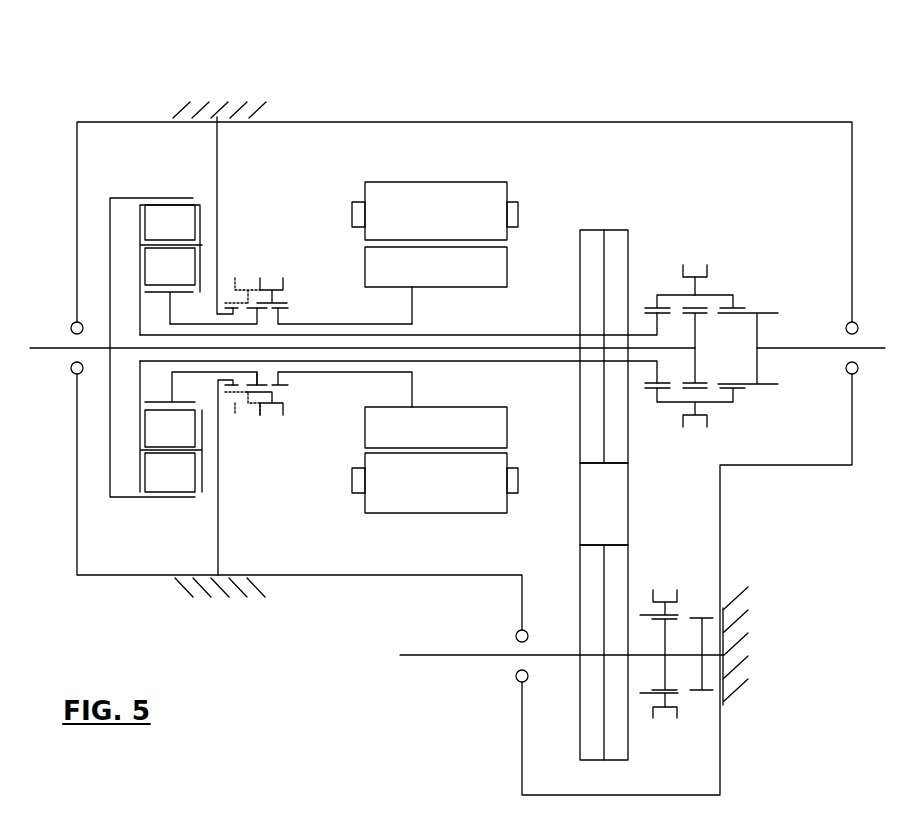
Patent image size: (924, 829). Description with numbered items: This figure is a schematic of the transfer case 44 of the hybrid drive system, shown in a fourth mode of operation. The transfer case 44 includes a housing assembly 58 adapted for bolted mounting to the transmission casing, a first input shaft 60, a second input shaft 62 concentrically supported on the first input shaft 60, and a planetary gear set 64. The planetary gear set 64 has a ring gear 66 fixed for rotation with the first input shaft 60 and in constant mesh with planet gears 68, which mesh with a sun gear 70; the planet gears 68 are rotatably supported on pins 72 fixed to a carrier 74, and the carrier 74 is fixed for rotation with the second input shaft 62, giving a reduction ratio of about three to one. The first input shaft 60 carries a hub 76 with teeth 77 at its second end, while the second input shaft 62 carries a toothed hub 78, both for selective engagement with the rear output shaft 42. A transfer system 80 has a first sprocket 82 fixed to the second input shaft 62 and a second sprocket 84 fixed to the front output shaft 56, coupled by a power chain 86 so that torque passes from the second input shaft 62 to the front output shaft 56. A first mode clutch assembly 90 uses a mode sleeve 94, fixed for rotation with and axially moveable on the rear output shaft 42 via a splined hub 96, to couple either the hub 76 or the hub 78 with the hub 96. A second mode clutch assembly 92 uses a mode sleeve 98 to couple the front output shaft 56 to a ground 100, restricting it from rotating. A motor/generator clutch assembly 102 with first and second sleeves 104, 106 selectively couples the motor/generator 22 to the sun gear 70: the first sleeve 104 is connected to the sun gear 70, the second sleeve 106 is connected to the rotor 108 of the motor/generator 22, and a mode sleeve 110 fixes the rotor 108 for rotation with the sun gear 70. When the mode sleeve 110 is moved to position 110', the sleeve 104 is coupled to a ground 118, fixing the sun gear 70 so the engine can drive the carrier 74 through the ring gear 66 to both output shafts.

The transfer case 44 is at (487, 63).
The housing assembly 58 is at (703, 122).
The first input shaft 60 is at (43, 347).
The rear output shaft 42 is at (868, 348).
The front output shaft 56 is at (435, 657).
The ring gear 66 is at (120, 197).
The planetary gear set 64 is at (194, 240).
The planet gears 68 is at (188, 212).
The carrier 74 is at (186, 423).
The sun gear 70 is at (177, 402).
The pins 72 is at (180, 452).
The ground 118 is at (217, 145).
The motor/generator clutch assembly 102 is at (273, 268).
The first sleeve 104 is at (193, 323).
The second sleeve 106 is at (323, 323).
The rotor 108 is at (448, 288).
The mode sleeve 110 is at (318, 406).
The mode sleeve position 110' is at (260, 427).
The motor/generator 22 is at (489, 170).
The second input shaft 62 is at (528, 334).
The transfer system 80 is at (604, 470).
The first sprocket 82 is at (628, 238).
The power chain 86 is at (628, 488).
The second sprocket 84 is at (580, 566).
The first mode clutch assembly 90 is at (726, 316).
The mode sleeve 94 is at (723, 294).
The toothed hub 78 is at (643, 312).
The hub 76 is at (693, 342).
The splined hub 96 is at (763, 311).
The teeth 77 is at (703, 388).
The second mode clutch assembly 92 is at (676, 656).
The mode sleeve 98 is at (647, 613).
The ground 100 is at (697, 613).